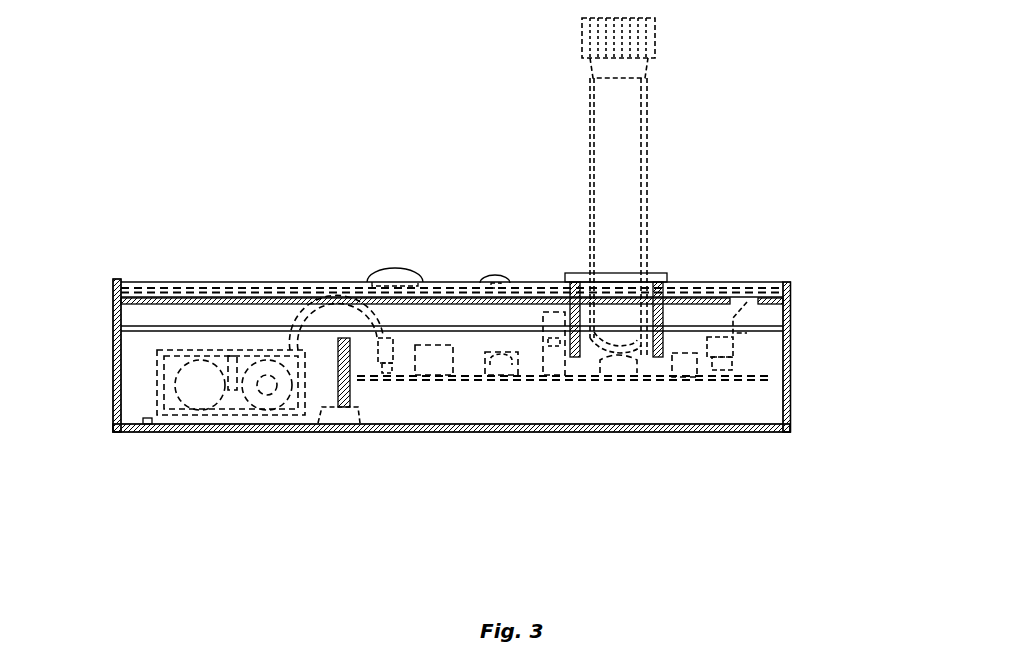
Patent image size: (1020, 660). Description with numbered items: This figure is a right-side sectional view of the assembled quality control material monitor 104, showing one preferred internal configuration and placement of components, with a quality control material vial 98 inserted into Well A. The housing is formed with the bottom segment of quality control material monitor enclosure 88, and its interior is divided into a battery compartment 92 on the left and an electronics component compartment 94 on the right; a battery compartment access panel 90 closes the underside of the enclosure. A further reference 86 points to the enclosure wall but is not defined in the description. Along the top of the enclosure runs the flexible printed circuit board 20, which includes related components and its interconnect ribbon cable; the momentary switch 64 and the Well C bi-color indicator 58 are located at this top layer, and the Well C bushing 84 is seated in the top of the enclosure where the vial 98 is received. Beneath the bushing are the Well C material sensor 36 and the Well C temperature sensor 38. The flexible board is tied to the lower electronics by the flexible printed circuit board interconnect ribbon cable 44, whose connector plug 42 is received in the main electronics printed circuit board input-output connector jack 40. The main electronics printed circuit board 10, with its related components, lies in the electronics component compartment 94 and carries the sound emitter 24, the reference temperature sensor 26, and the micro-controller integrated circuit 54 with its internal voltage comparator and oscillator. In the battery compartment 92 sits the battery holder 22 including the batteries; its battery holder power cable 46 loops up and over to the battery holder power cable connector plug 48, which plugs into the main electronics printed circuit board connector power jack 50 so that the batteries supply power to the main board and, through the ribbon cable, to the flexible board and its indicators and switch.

The main electronics printed circuit board 10 is at (663, 380).
The flexible printed circuit board 20 is at (220, 283).
The battery holder 22 is at (185, 348).
The sound emitter 24 is at (440, 375).
The reference temperature sensor 26 is at (493, 377).
The Well C material sensor 36 is at (550, 377).
The Well C temperature sensor 38 is at (613, 375).
The main electronics printed circuit board input-output connector jack 40 is at (727, 370).
The flexible printed circuit board interconnect ribbon cable connector plug 42 is at (724, 345).
The flexible printed circuit board interconnect ribbon cable 44 is at (753, 320).
The battery holder power cable 46 is at (305, 315).
The battery holder power cable connector plug 48 is at (386, 375).
The main electronics printed circuit board connector power jack 50 is at (350, 407).
The micro-controller integrated circuit 54 is at (685, 360).
The Well C bi-color indicator 58 is at (497, 283).
The momentary switch 64 is at (403, 277).
The Well C bushing 84 is at (652, 282).
The side wall 86 is at (113, 313).
The bottom segment of quality control material monitor enclosure 88 is at (788, 402).
The battery compartment access panel 90 is at (187, 430).
The battery compartment 92 is at (142, 366).
The electronics component compartment 94 is at (731, 409).
The quality control material vial 98 is at (648, 128).
The assembled quality control material monitor 104 is at (875, 436).